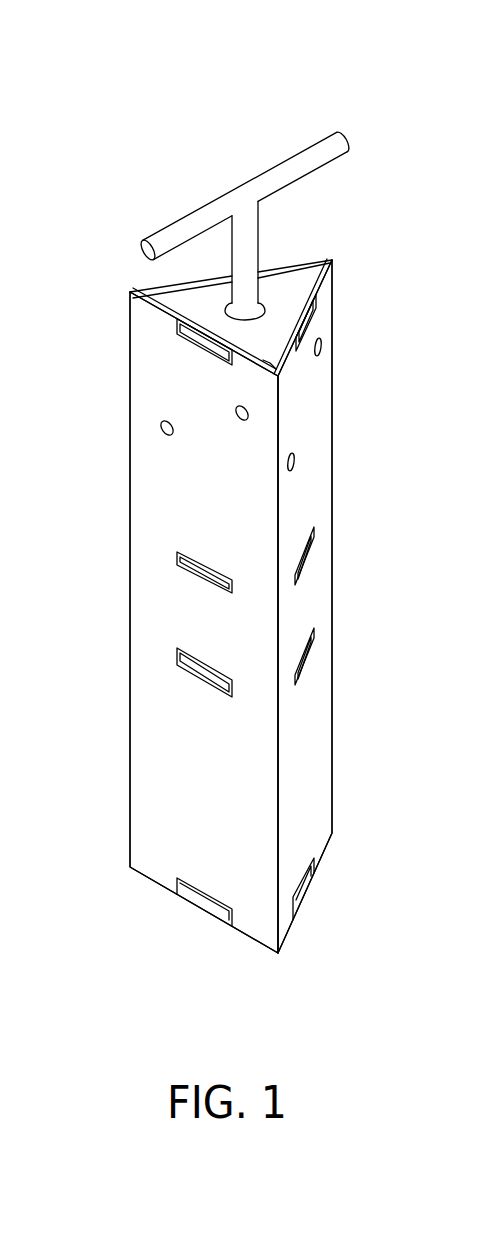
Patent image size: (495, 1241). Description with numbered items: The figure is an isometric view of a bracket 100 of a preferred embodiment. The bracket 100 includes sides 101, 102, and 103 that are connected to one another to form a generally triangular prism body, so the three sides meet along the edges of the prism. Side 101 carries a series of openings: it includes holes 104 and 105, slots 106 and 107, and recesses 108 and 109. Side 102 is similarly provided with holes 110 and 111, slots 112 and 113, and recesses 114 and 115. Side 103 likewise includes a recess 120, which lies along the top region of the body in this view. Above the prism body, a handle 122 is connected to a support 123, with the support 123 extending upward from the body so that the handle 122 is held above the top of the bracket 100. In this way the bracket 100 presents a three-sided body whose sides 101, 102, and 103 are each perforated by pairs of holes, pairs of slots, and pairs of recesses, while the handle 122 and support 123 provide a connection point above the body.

The bracket 100 is at (162, 100).
The side 101 is at (155, 538).
The side 102 is at (310, 508).
The side 103 is at (130, 408).
The hole 104 is at (242, 422).
The hole 105 is at (168, 437).
The slot 106 is at (183, 560).
The slot 107 is at (203, 685).
The recess 108 is at (192, 346).
The recess 109 is at (208, 895).
The hole 110 is at (323, 345).
The hole 111 is at (296, 460).
The slot 112 is at (308, 554).
The slot 113 is at (310, 660).
The recess 114 is at (305, 318).
The recess 115 is at (307, 862).
The recess 120 is at (210, 282).
The handle 122 is at (320, 168).
The support 123 is at (262, 235).